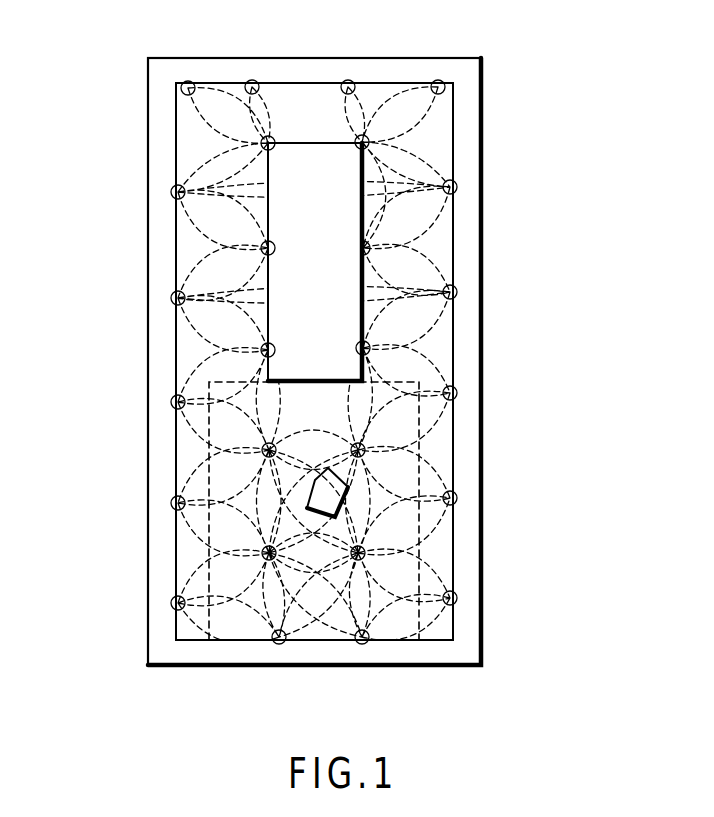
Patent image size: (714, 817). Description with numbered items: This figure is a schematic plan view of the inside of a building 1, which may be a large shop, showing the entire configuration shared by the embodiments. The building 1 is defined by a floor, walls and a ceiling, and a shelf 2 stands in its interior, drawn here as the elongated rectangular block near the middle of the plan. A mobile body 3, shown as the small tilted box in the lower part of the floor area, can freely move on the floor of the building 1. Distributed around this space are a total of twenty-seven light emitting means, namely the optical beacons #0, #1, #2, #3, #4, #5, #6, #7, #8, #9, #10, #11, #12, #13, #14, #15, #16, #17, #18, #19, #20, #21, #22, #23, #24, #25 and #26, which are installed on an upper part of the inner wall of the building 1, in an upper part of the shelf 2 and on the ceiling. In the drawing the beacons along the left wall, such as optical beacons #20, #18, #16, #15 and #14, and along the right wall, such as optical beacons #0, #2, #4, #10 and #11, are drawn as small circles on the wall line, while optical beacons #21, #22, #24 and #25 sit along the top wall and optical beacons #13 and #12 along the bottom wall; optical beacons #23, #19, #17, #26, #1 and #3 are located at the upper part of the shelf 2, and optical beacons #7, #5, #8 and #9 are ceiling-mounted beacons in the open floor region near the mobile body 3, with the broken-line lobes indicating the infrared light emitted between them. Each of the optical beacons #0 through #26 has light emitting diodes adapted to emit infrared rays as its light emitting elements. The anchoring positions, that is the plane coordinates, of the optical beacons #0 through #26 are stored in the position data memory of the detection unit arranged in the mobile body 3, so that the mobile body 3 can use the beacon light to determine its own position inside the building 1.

The building 1 is at (482, 76).
The shelf 2 is at (363, 320).
The mobile body 3 is at (345, 500).
The optical beacon 6 is at (316, 386).
The optical beacon 0 is at (454, 182).
The optical beacon 4 is at (454, 388).
The optical beacon 5 is at (364, 448).
The optical beacon 7 is at (263, 448).
The optical beacon 8 is at (263, 551).
The optical beacon 9 is at (364, 551).
The optical beacon 10 is at (454, 493).
The optical beacon 11 is at (454, 593).
The optical beacon 12 is at (368, 642).
The optical beacon 13 is at (274, 642).
The optical beacon 14 is at (178, 597).
The optical beacon 15 is at (178, 497).
The optical beacon 16 is at (178, 396).
The optical beacon 17 is at (262, 348).
The optical beacon 18 is at (178, 292).
The optical beacon 19 is at (262, 246).
The optical beacon 20 is at (176, 186).
The optical beacon 21 is at (186, 81).
The optical beacon 22 is at (251, 80).
The optical beacon 23 is at (262, 141).
The optical beacon 24 is at (346, 80).
The optical beacon 25 is at (439, 80).
The optical beacon 26 is at (368, 140).